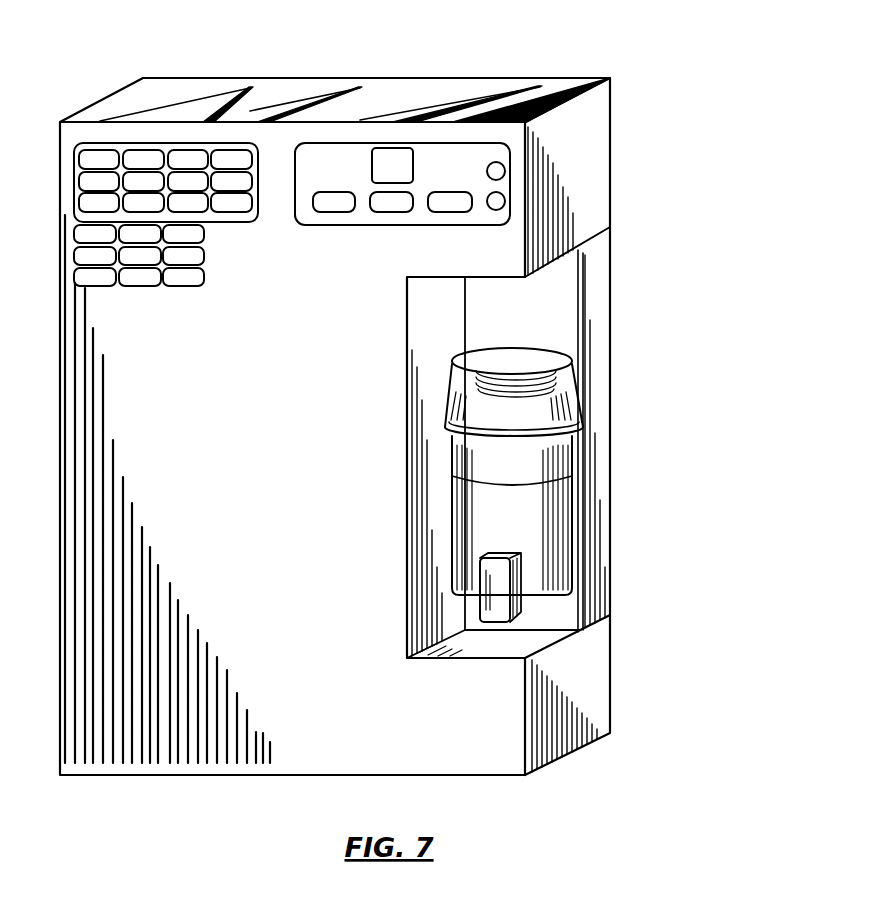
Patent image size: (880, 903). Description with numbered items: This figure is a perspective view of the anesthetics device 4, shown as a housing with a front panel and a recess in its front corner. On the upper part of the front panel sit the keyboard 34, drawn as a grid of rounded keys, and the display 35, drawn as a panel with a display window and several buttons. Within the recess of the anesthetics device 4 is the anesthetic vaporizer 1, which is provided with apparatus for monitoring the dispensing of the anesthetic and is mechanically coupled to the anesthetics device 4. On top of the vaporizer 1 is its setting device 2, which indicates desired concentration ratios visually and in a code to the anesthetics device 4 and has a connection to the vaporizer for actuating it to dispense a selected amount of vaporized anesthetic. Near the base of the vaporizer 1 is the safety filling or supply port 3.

The anesthetic vaporizer 1 is at (540, 513).
The setting device 2 is at (580, 412).
The safety filling or supply port 3 is at (503, 582).
The anesthetics device 4 is at (600, 216).
The keyboard 34 is at (223, 178).
The display 35 is at (452, 163).